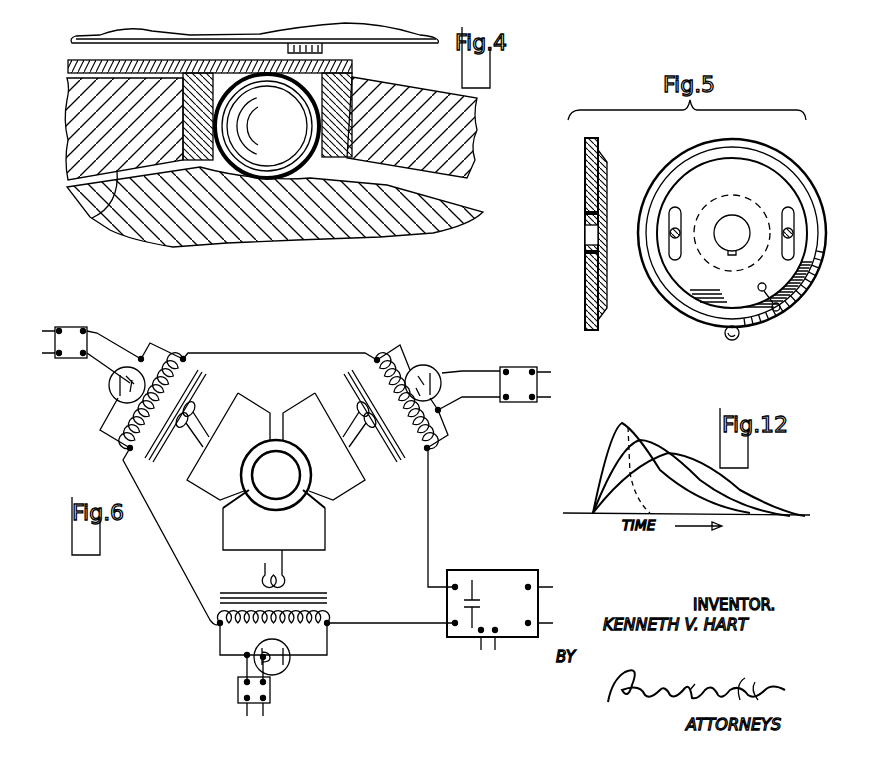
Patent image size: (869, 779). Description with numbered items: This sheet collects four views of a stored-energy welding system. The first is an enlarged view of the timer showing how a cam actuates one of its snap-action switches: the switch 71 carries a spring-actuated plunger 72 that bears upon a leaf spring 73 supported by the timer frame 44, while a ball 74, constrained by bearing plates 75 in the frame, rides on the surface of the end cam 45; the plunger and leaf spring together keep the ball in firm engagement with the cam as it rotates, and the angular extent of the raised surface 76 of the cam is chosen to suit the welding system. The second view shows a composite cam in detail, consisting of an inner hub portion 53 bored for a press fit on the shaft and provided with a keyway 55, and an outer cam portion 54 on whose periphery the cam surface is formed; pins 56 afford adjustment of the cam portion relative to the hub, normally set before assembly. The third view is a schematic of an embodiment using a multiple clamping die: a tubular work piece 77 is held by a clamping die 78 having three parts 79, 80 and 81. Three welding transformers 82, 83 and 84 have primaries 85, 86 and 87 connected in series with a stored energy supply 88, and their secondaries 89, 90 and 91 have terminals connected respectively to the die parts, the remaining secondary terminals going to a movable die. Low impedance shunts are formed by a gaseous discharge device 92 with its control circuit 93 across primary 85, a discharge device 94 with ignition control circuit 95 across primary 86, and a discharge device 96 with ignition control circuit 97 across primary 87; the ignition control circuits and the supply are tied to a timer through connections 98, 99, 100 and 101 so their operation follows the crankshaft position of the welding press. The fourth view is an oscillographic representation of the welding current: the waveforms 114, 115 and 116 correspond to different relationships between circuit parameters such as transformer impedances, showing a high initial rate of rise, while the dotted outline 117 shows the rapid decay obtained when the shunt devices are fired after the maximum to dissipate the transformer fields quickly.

In FIG. 4, the switch 71 is at (414, 36).
In FIG. 4, the plunger 72 is at (322, 50).
In FIG. 4, the leaf spring 73 is at (352, 68).
In FIG. 4, the ball 74 is at (303, 178).
In FIG. 4, the bearing plates 75 is at (180, 78).
In FIG. 4, the raised surface 76 is at (92, 218).
In FIG. 4, the timer frame 44 is at (455, 93).
In FIG. 4, the end cam 45 is at (423, 217).
In FIG. 5, the hub portion 53 is at (607, 172).
In FIG. 5, the cam portion 54 is at (585, 170).
In FIG. 5, the keyway 55 is at (585, 238).
In FIG. 5, the pins 56 is at (680, 218).
In FIG. 6, the tubular work piece 77 is at (330, 500).
In FIG. 6, the clamping die 78 is at (336, 514).
In FIG. 6, the die part 79 is at (365, 480).
In FIG. 6, the die part 80 is at (240, 393).
In FIG. 6, the die part 81 is at (223, 535).
In FIG. 6, the welding transformer 82 is at (384, 426).
In FIG. 6, the welding transformer 83 is at (204, 366).
In FIG. 6, the welding transformer 84 is at (220, 600).
In FIG. 6, the primary 85 is at (448, 440).
In FIG. 6, the primary 86 is at (183, 359).
In FIG. 6, the primary 87 is at (220, 632).
In FIG. 6, the stored energy supply 88 is at (498, 570).
In FIG. 6, the secondary 89 is at (363, 428).
In FIG. 6, the secondary 90 is at (186, 412).
In FIG. 6, the secondary 91 is at (260, 569).
In FIG. 6, the gaseous discharge device 92 is at (432, 368).
In FIG. 6, the control circuit 93 is at (528, 348).
In FIG. 6, the discharge device 94 is at (110, 390).
In FIG. 6, the ignition control circuit 95 is at (75, 360).
In FIG. 6, the discharge device 96 is at (290, 663).
In FIG. 6, the ignition control circuit 97 is at (272, 688).
In FIG. 6, the connection 98 is at (537, 384).
In FIG. 6, the connection 99 is at (89, 344).
In FIG. 6, the connection 100 is at (254, 719).
In FIG. 6, the connection 101 is at (491, 654).
In FIG. 12, the waveform 114 is at (604, 447).
In FIG. 12, the waveform 115 is at (672, 456).
In FIG. 12, the waveform 116 is at (740, 490).
In FIG. 12, the dotted outline waveform 117 is at (638, 490).